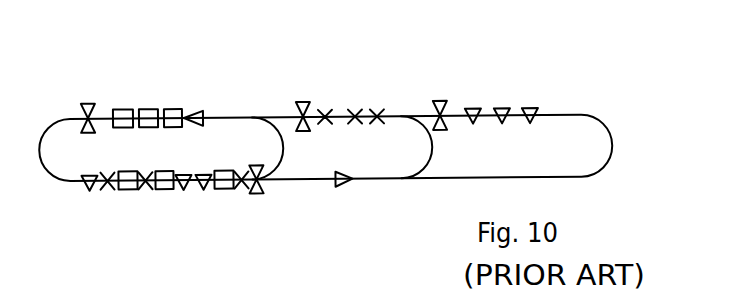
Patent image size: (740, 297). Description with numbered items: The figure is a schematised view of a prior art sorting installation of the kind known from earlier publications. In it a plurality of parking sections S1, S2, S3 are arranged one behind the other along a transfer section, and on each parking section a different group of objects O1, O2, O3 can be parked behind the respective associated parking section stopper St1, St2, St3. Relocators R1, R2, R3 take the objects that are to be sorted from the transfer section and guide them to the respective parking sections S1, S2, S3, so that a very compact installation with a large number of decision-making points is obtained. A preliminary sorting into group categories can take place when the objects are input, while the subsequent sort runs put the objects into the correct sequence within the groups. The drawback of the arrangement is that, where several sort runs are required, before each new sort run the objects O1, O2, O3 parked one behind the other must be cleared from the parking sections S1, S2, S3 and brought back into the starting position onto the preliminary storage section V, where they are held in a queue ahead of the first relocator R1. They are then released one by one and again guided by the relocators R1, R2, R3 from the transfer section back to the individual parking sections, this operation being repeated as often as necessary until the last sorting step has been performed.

The relocator R1 is at (283, 150).
The relocator R2 is at (432, 150).
The relocator R3 is at (612, 150).
The parking section stopper St1 is at (87, 103).
The parking section stopper St2 is at (302, 103).
The parking section stopper St3 is at (441, 103).
The parking section S1 is at (187, 106).
The parking section S2 is at (392, 106).
The parking section S3 is at (538, 106).
The object O1 is at (185, 117).
The object O2 is at (383, 117).
The object O3 is at (532, 113).
The preliminary storage section V is at (247, 216).